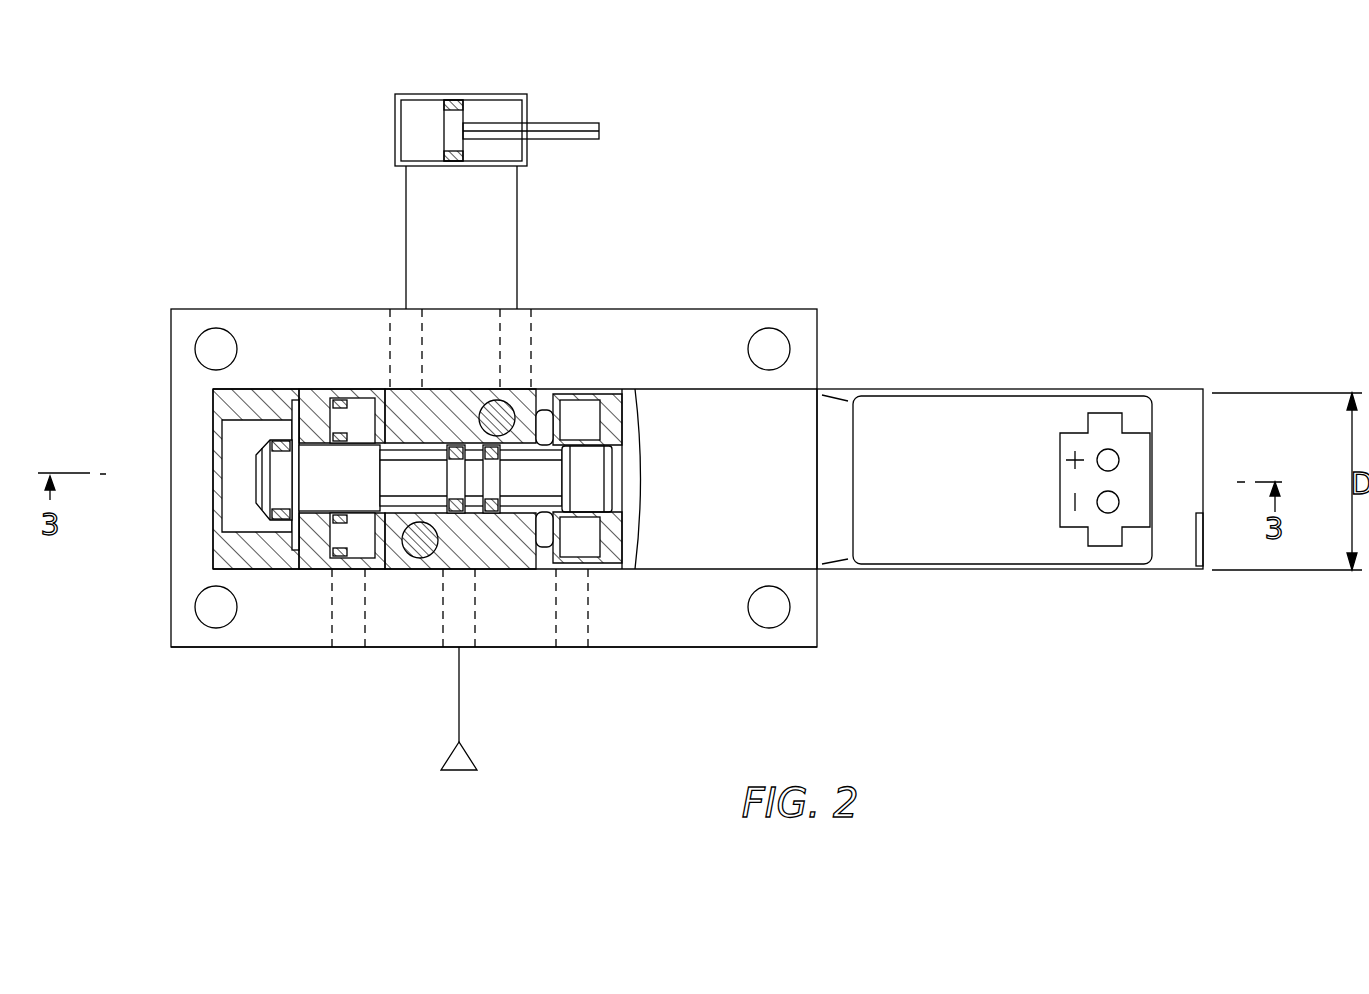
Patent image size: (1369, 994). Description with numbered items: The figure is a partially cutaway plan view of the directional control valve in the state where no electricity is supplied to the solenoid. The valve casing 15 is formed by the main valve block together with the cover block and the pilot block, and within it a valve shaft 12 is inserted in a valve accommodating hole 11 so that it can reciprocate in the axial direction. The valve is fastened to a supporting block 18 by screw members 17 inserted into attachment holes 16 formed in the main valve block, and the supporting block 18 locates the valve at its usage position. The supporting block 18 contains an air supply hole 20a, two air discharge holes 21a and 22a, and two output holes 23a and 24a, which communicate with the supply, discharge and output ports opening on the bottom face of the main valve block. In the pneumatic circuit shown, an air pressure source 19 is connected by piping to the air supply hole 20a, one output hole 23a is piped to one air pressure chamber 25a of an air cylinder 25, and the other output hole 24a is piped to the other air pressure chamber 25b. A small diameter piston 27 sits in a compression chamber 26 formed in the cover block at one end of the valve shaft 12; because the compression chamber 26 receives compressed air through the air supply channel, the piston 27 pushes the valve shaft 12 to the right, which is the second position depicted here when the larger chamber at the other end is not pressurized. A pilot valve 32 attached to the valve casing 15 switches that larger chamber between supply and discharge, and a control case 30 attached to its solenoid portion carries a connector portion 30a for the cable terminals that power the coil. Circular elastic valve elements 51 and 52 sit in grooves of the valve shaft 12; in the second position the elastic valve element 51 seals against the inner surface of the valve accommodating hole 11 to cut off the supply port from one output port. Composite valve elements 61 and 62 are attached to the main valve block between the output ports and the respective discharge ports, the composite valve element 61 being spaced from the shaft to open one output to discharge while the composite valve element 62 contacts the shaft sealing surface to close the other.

The valve accommodating hole 11 is at (408, 440).
The valve shaft 12 is at (585, 473).
The valve casing 15 is at (735, 420).
The attachment holes 16 is at (492, 410).
The screw members 17 is at (525, 395).
The supporting block 18 is at (725, 625).
The air pressure source 19 is at (458, 772).
The air supply hole 20a is at (468, 660).
The air discharge hole 21a is at (572, 660).
The air discharge hole 22a is at (347, 660).
The output hole 23a is at (527, 312).
The output hole 24a is at (400, 306).
The air cylinder 25 is at (490, 96).
The air pressure chamber 25a is at (490, 162).
The air pressure chamber 25b is at (410, 128).
The compression chamber 26 is at (230, 513).
The small diameter piston 27 is at (252, 466).
The control case 30 is at (1027, 437).
The connector portion 30a is at (1108, 437).
The pilot valve 32 is at (920, 391).
The elastic valve element 51 is at (496, 570).
The elastic valve element 52 is at (465, 448).
The composite valve element 61 is at (548, 570).
The composite valve element 62 is at (376, 570).